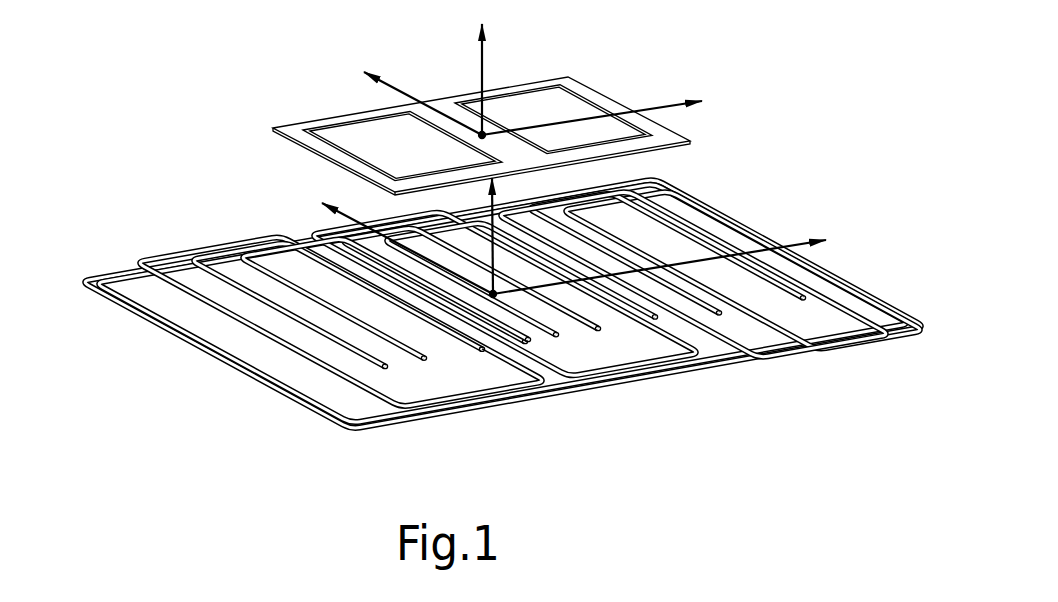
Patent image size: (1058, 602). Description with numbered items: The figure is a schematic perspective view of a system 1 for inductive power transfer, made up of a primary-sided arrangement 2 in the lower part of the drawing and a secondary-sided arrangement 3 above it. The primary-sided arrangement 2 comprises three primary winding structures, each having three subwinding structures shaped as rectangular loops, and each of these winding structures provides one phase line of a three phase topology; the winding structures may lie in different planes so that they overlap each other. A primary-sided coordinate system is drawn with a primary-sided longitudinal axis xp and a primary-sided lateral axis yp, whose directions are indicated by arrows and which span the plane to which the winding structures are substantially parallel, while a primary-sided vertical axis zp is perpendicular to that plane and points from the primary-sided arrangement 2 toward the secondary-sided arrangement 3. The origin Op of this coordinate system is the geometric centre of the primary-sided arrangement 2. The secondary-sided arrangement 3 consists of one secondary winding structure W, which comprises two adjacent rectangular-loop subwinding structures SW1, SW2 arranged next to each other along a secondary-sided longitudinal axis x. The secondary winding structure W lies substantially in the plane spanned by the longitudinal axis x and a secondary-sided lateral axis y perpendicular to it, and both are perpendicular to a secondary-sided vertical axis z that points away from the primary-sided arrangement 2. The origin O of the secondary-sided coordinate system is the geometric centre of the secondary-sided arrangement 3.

The system for inductive power transfer 1 is at (177, 415).
The primary-sided arrangement 2 is at (150, 350).
The secondary-sided arrangement 3 is at (456, 105).
The secondary winding structure W is at (317, 156).
The subwinding structure SW1 is at (365, 112).
The subwinding structure SW2 is at (522, 83).
The origin of the secondary-sided coordinate system O is at (470, 140).
The origin of the primary-sided coordinate system Op is at (493, 294).
The secondary-sided longitudinal axis x is at (604, 107).
The secondary-sided lateral axis y is at (423, 90).
The secondary-sided vertical axis z is at (468, 79).
The primary-sided longitudinal axis xp is at (677, 254).
The primary-sided lateral axis yp is at (390, 236).
The primary-sided vertical axis zp is at (618, 188).